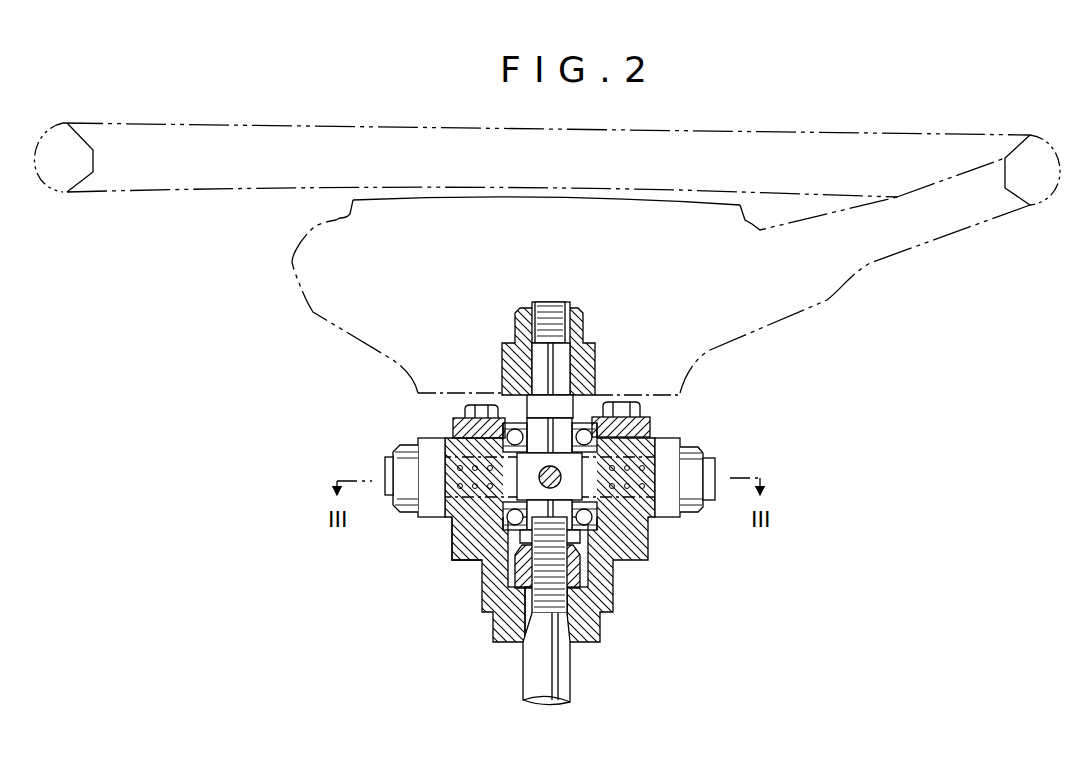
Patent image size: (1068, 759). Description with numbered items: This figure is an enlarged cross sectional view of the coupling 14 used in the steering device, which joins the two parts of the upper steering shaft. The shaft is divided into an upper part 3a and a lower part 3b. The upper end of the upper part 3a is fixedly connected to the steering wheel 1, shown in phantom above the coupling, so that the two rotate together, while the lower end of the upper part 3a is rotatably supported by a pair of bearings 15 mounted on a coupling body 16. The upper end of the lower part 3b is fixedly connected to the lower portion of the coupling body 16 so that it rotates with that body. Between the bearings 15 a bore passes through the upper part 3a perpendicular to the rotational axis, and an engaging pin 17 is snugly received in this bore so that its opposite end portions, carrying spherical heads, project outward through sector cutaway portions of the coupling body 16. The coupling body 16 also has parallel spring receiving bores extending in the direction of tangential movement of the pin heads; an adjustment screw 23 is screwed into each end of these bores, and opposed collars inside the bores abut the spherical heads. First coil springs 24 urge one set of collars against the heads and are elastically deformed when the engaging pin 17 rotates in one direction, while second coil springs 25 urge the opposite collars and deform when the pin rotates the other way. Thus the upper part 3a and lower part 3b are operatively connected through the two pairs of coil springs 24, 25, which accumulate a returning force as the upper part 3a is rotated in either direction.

The steering wheel 1 is at (830, 302).
The upper part of upper steering shaft 3a is at (550, 386).
The lower part of upper steering shaft 3b is at (557, 700).
The coupling 14 is at (440, 568).
The bearings 15 is at (650, 434).
The coupling body 16 is at (446, 545).
The engaging pin 17 is at (454, 421).
The adjustment screw 23 is at (382, 462).
The first coil springs 24 is at (453, 510).
The second coil springs 25 is at (650, 518).